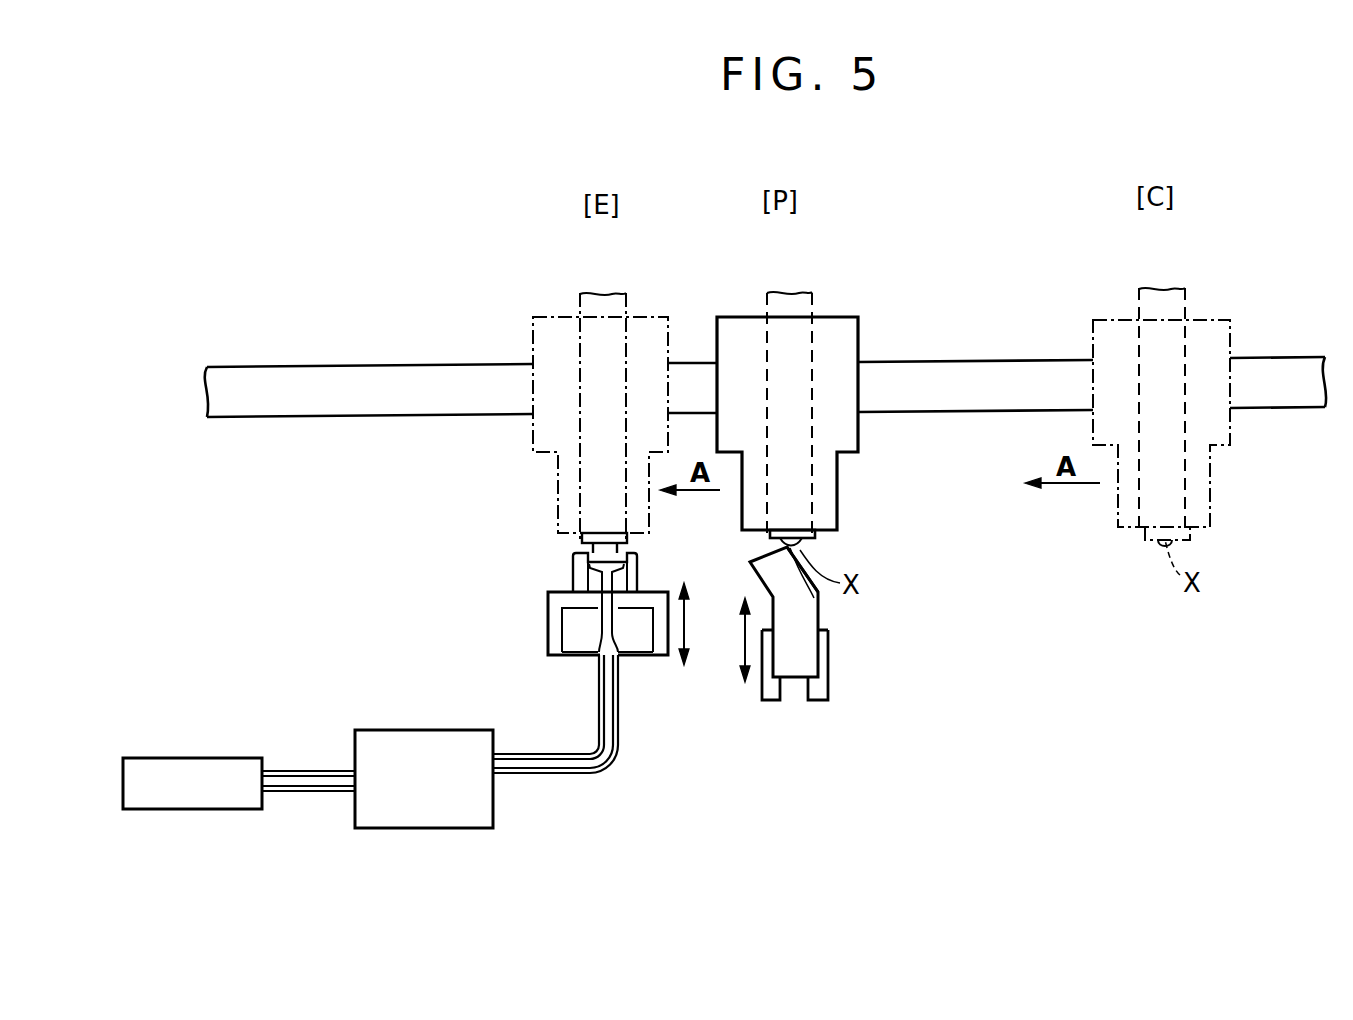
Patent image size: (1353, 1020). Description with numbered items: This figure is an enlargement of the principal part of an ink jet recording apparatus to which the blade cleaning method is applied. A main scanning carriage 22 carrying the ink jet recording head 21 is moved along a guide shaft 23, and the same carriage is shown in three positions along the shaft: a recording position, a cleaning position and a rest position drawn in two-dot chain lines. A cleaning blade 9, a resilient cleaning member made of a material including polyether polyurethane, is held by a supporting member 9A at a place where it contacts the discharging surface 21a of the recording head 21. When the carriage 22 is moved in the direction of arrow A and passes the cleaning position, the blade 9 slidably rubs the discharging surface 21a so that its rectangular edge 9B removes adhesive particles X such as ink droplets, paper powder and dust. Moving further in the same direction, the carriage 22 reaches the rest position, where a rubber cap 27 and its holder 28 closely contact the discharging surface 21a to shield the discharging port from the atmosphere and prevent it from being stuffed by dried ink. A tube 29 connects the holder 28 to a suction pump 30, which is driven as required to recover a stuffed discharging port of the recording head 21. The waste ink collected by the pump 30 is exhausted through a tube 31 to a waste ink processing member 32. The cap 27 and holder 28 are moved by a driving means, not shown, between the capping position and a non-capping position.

The cleaning blade 9 is at (808, 668).
The supporting member 9A is at (822, 648).
The rectangular edge 9B is at (792, 555).
The ink jet recording head 21 is at (602, 305).
The discharging surface 21a is at (805, 543).
The main scanning carriage 22 is at (649, 327).
The guide shaft 23 is at (446, 378).
The rubber cap 27 is at (580, 575).
The holder 28 is at (553, 633).
The tube 29 is at (600, 695).
The suction pump 30 is at (423, 745).
The tube 31 is at (305, 770).
The waste ink processing member 32 is at (235, 765).